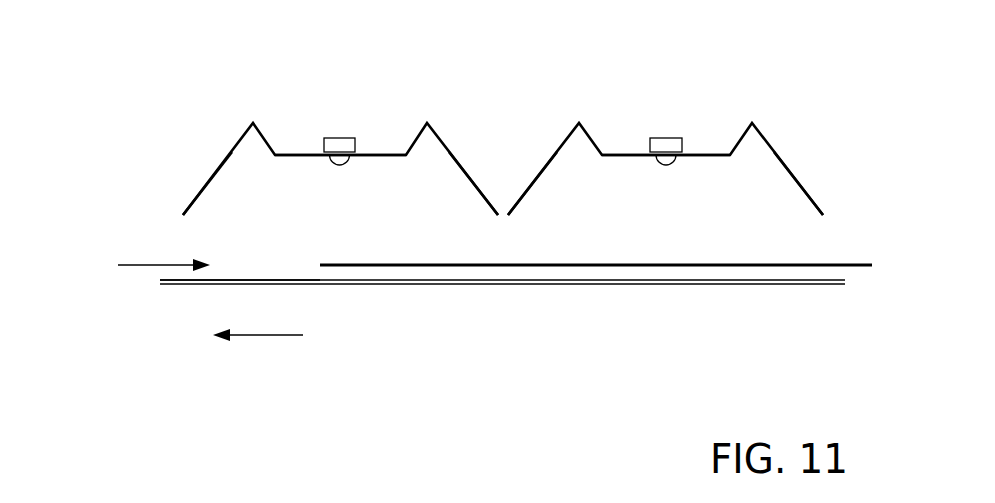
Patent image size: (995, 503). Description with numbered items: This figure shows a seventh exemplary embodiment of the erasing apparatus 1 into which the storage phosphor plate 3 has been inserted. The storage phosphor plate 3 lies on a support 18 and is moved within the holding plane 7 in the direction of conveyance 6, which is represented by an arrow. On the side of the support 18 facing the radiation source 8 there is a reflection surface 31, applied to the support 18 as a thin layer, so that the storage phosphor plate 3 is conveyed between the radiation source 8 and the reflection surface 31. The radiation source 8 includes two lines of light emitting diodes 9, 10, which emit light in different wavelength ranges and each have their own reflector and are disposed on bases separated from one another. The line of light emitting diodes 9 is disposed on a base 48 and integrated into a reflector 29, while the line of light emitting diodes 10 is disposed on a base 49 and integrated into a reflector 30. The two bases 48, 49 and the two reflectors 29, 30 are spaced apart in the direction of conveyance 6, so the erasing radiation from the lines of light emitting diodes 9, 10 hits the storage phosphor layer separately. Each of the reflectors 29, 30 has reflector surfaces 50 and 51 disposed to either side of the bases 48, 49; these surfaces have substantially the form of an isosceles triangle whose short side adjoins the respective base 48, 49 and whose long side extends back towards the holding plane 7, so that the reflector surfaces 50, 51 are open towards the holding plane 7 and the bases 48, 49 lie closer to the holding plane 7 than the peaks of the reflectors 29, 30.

The erasing apparatus 1 is at (156, 356).
The storage phosphor plate 3 is at (857, 267).
The direction of conveyance 6 is at (267, 337).
The holding plane 7 is at (142, 263).
The radiation source 8 is at (835, 78).
The line of light emitting diodes 9 is at (343, 143).
The line of light emitting diodes 10 is at (668, 142).
The support 18 is at (532, 286).
The reflector 29 is at (178, 133).
The reflector 30 is at (852, 177).
The reflection surface 31 is at (298, 279).
The base 48 is at (293, 153).
The base 49 is at (622, 153).
The reflector surface 50 is at (212, 180).
The reflector surface 51 is at (457, 168).